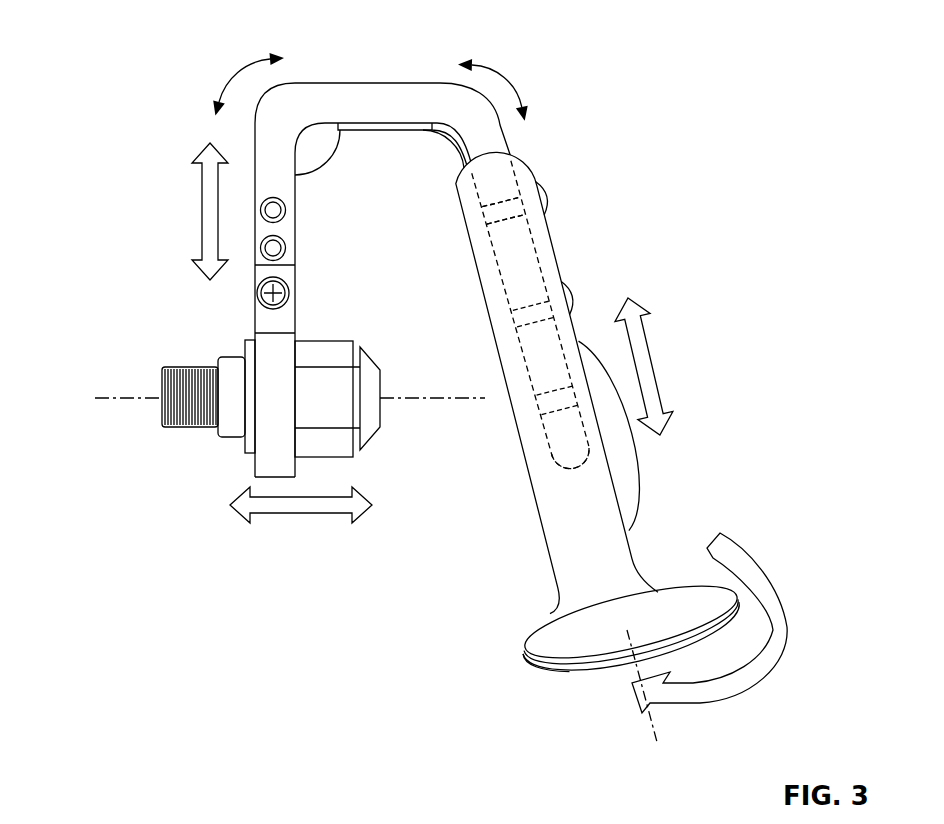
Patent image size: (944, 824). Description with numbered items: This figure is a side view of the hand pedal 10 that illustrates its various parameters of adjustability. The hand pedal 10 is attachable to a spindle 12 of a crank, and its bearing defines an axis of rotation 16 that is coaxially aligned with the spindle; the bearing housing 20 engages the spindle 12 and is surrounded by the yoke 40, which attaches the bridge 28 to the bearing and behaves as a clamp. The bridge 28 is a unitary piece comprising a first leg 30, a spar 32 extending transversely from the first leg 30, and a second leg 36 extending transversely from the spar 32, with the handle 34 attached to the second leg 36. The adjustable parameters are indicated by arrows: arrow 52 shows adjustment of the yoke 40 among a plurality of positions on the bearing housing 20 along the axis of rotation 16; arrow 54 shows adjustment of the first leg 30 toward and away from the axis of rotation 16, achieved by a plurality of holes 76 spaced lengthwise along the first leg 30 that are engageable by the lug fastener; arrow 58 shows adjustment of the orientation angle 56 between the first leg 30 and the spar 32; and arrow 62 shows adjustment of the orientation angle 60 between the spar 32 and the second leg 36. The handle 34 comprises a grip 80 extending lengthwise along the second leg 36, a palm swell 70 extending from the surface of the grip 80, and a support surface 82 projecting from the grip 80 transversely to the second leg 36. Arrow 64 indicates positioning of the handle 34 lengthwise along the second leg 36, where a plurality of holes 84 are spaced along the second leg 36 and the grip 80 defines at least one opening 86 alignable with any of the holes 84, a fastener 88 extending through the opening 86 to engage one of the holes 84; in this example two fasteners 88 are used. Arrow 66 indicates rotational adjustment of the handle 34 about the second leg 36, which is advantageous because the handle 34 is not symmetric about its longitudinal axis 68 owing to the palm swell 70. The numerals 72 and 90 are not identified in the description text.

The hand pedal 10 is at (123, 16).
The spindle 12 is at (162, 413).
The axis of rotation 16 is at (102, 398).
The bearing housing 20 is at (317, 339).
The bridge 28 is at (257, 141).
The first leg 30 is at (265, 242).
The spar 32 is at (380, 102).
The handle 34 is at (620, 560).
The second leg 36 is at (577, 442).
The yoke 40 is at (273, 342).
The arrow 52 is at (300, 517).
The arrow 54 is at (200, 188).
The orientation angle 56 is at (332, 167).
The arrow 58 is at (237, 65).
The orientation angle 60 is at (425, 153).
The arrow 62 is at (510, 63).
The arrow 64 is at (658, 366).
The arrow 66 is at (740, 690).
The longitudinal axis 68 is at (650, 722).
The palm swell 70 is at (632, 500).
The display mount 72 is at (126, 807).
The holes 76 is at (262, 249).
The grip 80 is at (542, 532).
The support surface 82 is at (545, 630).
The holes 84 is at (498, 203).
The opening 86 is at (498, 203).
The fastener 88 is at (577, 300).
The display 90 is at (314, 821).